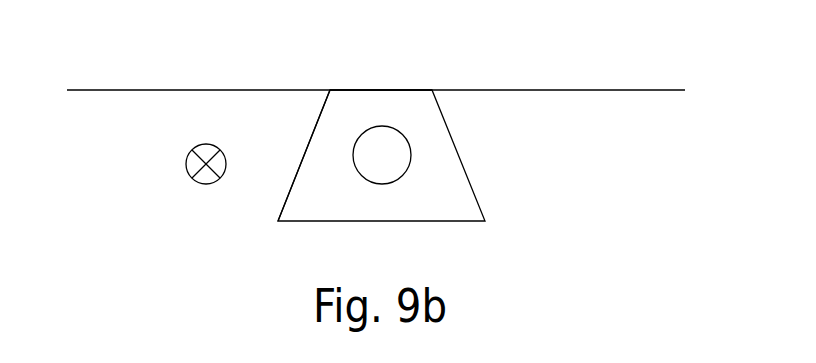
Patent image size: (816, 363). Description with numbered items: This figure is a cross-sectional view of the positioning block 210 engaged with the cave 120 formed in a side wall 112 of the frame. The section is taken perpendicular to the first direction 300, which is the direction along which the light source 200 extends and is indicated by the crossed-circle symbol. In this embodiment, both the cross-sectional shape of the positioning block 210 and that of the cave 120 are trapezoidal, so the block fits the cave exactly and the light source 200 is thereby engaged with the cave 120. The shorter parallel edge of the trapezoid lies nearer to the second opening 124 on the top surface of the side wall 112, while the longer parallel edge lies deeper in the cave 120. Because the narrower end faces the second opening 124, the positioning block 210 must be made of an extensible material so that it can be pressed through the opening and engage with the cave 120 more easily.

The side wall 112 is at (227, 103).
The cave 120 is at (314, 122).
The positioning block 210 is at (349, 108).
The second opening 124 is at (415, 90).
The light source 200 is at (390, 153).
The first direction 300 is at (206, 183).